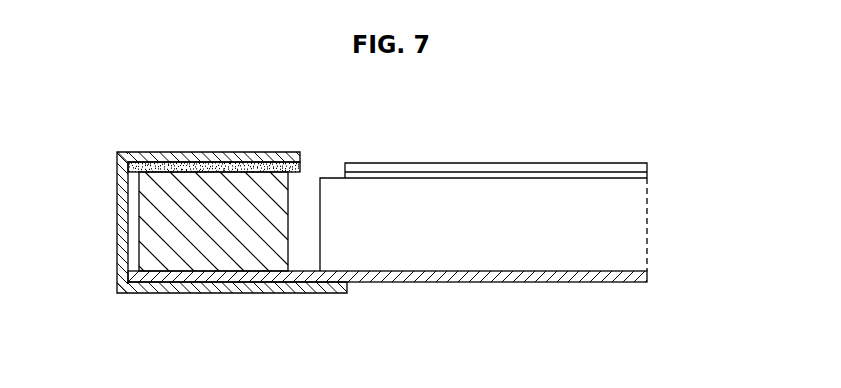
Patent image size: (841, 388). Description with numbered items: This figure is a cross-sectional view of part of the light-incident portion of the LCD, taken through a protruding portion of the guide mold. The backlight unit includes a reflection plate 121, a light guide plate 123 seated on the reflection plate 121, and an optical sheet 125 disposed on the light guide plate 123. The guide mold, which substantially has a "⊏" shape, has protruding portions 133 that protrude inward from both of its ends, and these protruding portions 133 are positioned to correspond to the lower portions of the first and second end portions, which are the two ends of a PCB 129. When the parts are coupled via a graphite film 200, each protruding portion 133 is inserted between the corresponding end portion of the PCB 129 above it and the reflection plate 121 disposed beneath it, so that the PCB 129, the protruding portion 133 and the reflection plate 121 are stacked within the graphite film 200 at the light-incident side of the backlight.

The graphite film 200 is at (117, 245).
The PCB 129 is at (186, 162).
The protruding portion 133 is at (220, 258).
The reflection plate 121 is at (648, 278).
The light guide plate 123 is at (638, 216).
The optical sheet 125 is at (648, 166).